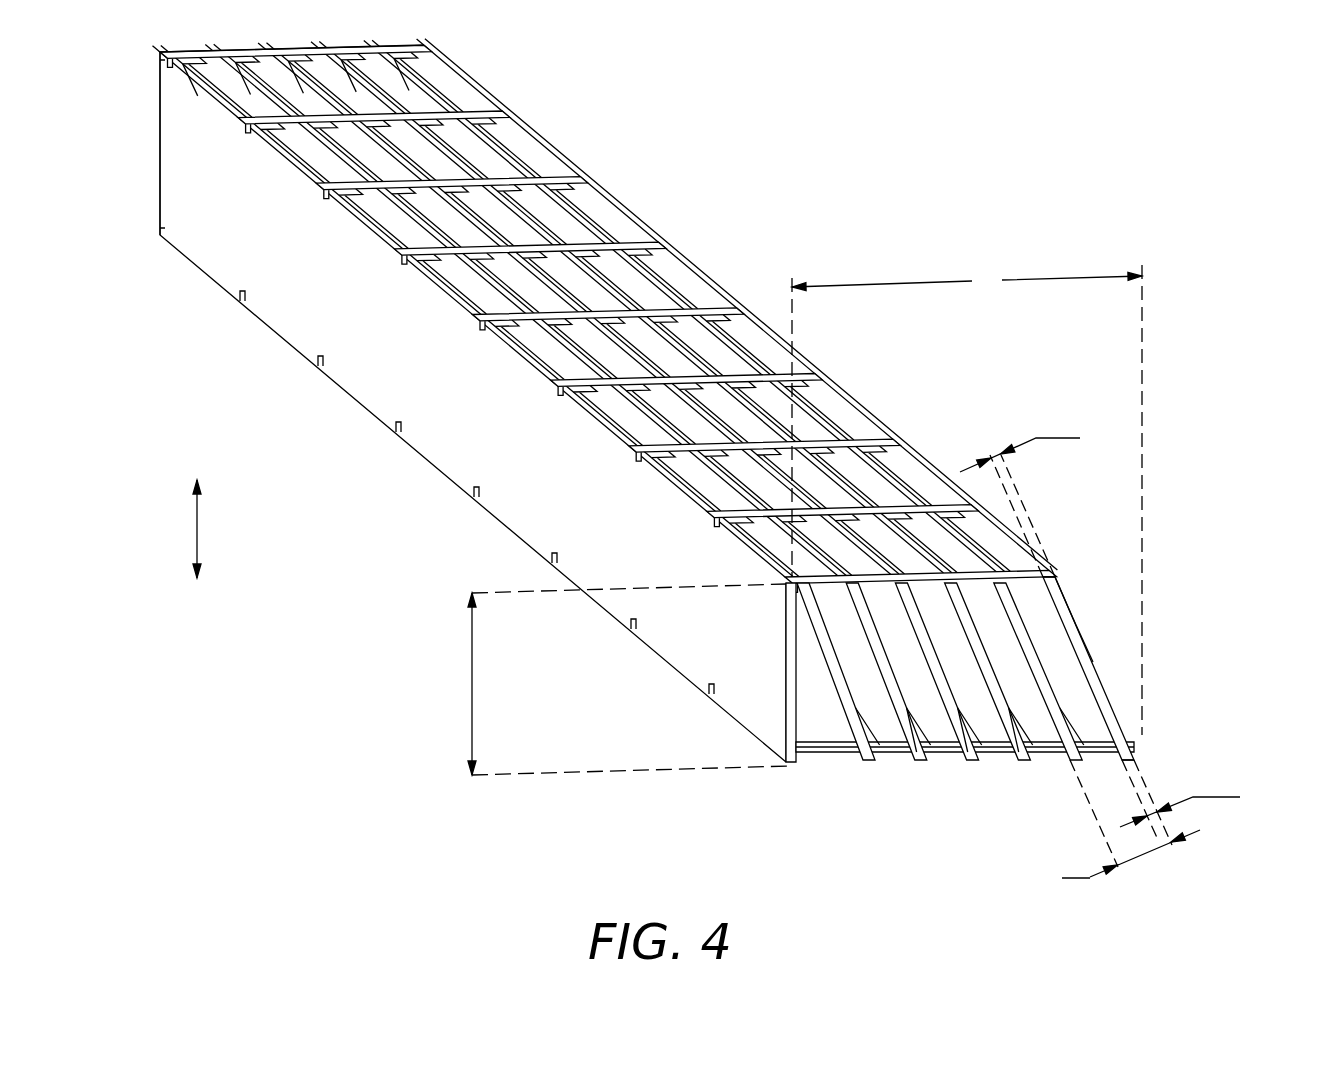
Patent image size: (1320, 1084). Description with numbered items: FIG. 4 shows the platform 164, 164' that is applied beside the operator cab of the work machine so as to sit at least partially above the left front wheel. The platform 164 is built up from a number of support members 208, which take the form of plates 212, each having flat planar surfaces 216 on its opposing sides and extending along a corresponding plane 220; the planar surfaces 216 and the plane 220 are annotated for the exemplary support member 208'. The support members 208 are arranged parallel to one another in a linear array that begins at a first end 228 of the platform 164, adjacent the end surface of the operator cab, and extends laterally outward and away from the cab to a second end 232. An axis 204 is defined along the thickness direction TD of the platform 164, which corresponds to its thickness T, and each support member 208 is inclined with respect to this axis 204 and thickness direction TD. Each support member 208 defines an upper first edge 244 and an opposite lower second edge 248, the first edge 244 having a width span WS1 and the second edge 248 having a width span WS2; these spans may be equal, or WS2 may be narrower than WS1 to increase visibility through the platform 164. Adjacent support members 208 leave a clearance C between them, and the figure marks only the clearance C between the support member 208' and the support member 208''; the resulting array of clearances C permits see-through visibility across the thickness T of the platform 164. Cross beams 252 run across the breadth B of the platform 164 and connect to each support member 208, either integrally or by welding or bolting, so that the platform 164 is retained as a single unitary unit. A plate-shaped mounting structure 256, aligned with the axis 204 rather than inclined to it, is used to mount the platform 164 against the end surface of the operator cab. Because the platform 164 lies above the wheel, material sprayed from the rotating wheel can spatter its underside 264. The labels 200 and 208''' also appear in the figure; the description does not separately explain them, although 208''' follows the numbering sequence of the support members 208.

The platform 164 is at (625, 143).
The louver assembly 164' is at (647, 71).
The grid frame 200 is at (853, 437).
The axis 204 is at (797, 332).
The support members 208 is at (965, 721).
The support member 208' is at (1154, 661).
The support member 208'' is at (1130, 671).
The slat 208''' is at (857, 712).
The plates 212 is at (1030, 660).
The planar surfaces 216 is at (1090, 660).
The plane 220 is at (1077, 618).
The first end 228 is at (313, 323).
The second end 232 is at (1073, 603).
The first edge 244 is at (1047, 560).
The second edge 248 is at (1133, 755).
The cross beams 252 is at (567, 185).
The mounting structure 256 is at (797, 732).
The underside 264 is at (1052, 758).
The breadth B is at (967, 500).
The thickness T is at (626, 679).
The thickness direction TD is at (214, 529).
The width span WS1 is at (1020, 494).
The width span WS2 is at (1181, 802).
The clearance C is at (1131, 819).